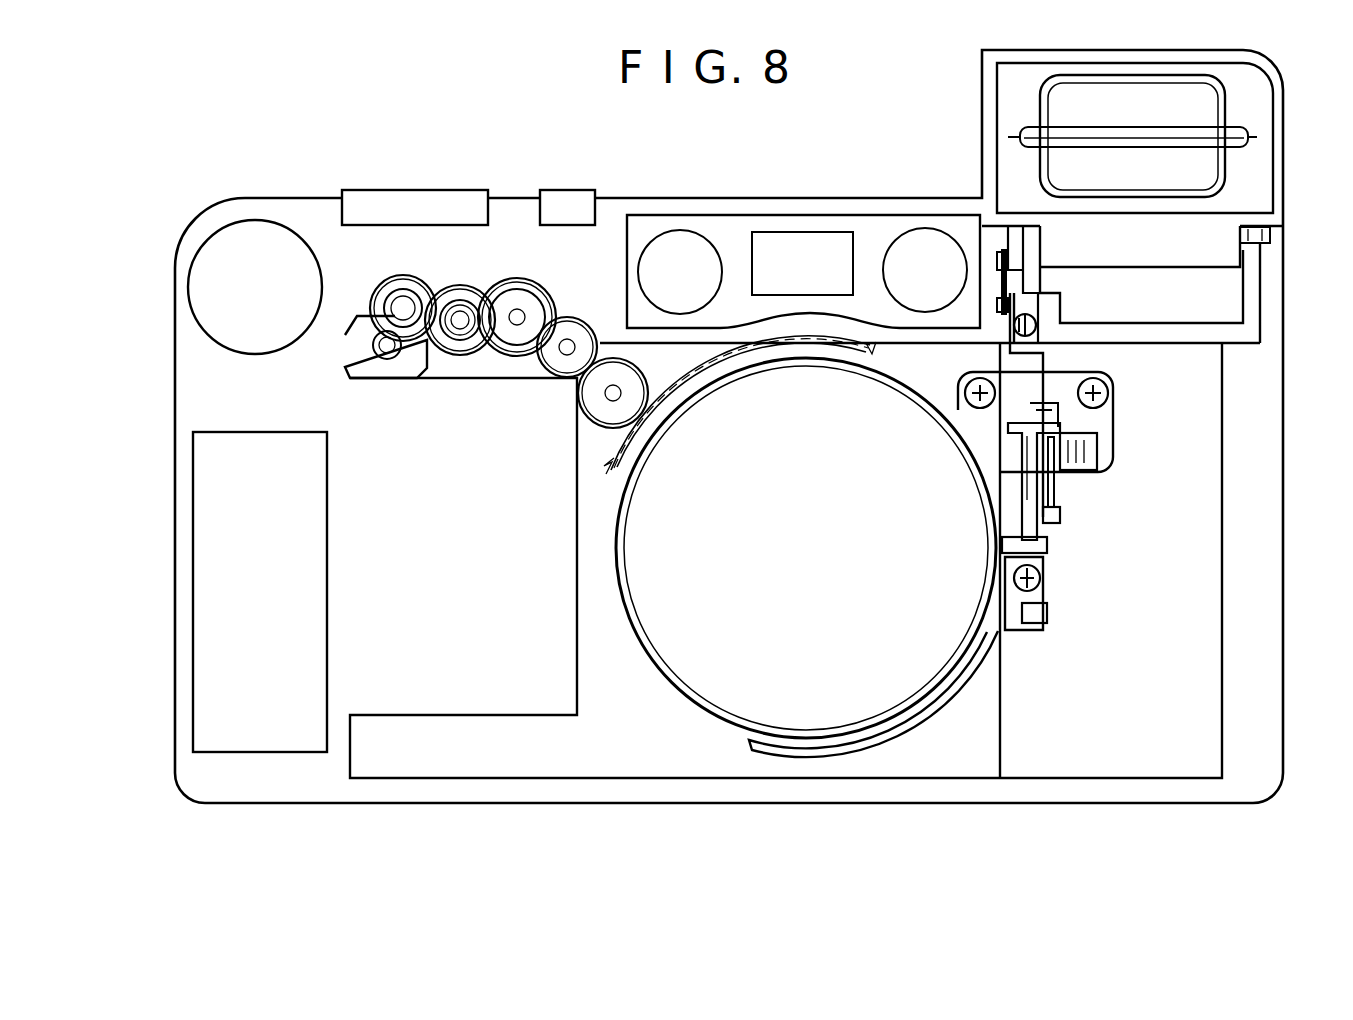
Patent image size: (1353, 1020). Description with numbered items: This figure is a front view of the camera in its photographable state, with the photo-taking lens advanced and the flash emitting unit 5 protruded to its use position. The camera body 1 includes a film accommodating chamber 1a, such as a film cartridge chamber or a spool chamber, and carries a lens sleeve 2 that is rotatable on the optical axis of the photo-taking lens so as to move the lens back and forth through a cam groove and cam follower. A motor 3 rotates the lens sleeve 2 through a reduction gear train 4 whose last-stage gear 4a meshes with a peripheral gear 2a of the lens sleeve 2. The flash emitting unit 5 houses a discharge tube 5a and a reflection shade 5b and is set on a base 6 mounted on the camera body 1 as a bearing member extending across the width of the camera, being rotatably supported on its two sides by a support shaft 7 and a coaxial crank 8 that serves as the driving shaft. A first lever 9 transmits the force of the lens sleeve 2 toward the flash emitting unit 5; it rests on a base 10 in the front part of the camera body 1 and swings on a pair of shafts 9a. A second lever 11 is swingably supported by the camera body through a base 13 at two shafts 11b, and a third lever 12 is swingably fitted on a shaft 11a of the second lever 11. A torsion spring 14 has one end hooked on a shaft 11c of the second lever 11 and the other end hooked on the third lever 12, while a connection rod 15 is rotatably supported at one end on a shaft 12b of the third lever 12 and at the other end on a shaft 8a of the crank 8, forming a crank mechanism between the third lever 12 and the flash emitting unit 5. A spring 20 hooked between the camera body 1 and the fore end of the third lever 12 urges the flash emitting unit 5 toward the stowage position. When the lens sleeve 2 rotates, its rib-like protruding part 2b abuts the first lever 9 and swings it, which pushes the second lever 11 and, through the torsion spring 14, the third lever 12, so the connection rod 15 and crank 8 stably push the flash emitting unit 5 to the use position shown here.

The camera body 1 is at (548, 762).
The film accommodating chamber 1a is at (1140, 752).
The lens sleeve 2 is at (720, 718).
The peripheral gear 2a is at (608, 470).
The rib-like protruding part 2b is at (1032, 570).
The motor 3 is at (360, 332).
The reduction gear train 4 is at (375, 247).
The gear 4a is at (573, 390).
The flash emitting unit 5 is at (1170, 56).
The discharge tube 5a is at (1190, 134).
The reflection shade 5b is at (1090, 85).
The base 6 is at (1253, 279).
The support shaft 7 is at (1270, 238).
The crank 8 is at (1008, 240).
The shaft 8a is at (996, 262).
The first lever 9 is at (1010, 632).
The shafts 9a is at (1050, 612).
The base 10 is at (1037, 590).
The second lever 11 is at (1030, 487).
The shaft 11a is at (1078, 468).
The shafts 11b is at (1097, 453).
The shaft 11c is at (1060, 514).
The third lever 12 is at (1043, 355).
The shaft 12b is at (1000, 306).
The base 13 is at (1103, 427).
The torsion spring 14 is at (1103, 411).
The connection rod 15 is at (1000, 288).
The spring 20 is at (1033, 321).